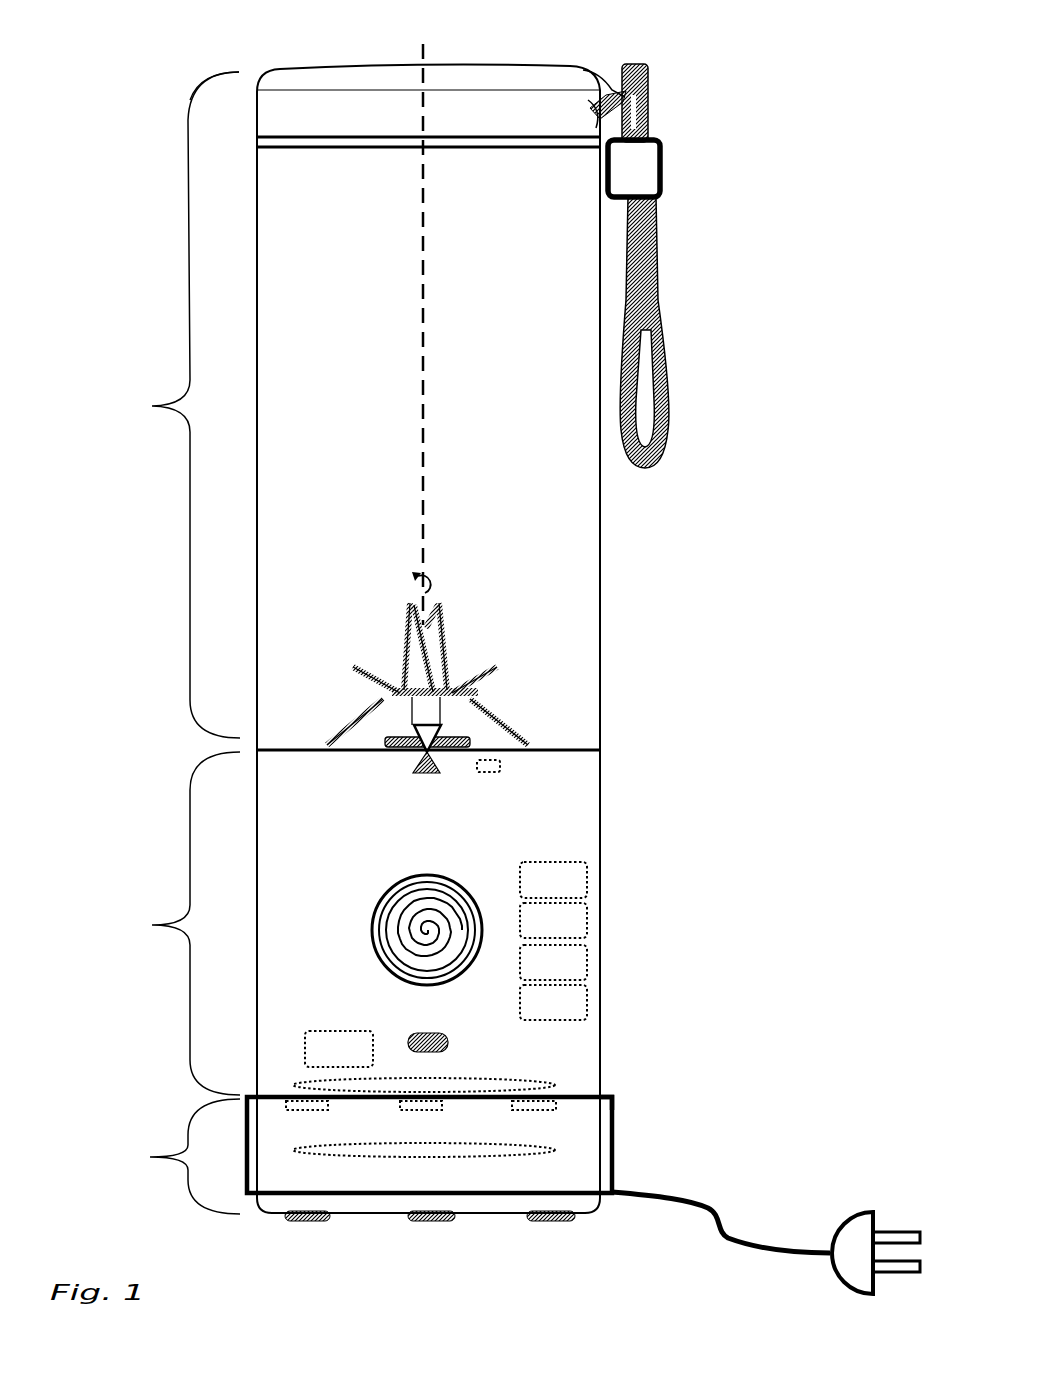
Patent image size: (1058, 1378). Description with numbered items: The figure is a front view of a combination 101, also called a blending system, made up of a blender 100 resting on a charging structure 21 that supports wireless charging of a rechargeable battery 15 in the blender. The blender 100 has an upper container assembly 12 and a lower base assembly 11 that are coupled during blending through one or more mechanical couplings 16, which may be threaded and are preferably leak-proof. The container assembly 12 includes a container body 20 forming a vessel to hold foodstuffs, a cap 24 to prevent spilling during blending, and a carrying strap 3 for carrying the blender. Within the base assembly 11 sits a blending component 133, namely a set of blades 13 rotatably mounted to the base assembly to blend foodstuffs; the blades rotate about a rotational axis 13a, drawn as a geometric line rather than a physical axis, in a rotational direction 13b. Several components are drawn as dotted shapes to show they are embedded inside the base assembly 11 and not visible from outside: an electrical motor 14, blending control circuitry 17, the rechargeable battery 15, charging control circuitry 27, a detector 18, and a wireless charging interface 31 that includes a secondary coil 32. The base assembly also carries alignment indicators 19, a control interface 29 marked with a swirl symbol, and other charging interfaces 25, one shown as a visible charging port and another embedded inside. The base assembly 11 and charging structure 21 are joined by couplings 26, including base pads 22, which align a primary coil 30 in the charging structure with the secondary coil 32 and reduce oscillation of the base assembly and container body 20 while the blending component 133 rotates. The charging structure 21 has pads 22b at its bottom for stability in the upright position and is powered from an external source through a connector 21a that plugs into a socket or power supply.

The blender 100 is at (755, 80).
The combination 101 is at (187, 76).
The container assembly 12 is at (152, 406).
The base assembly 11 is at (152, 925).
The cap 24 is at (435, 66).
The carrying strap 3 is at (668, 428).
The container body 20 is at (587, 475).
The rotational axis 13a is at (426, 458).
The rotational direction 13b is at (435, 585).
The blending component 133 is at (493, 670).
The set of blades 13 is at (787, 696).
The mechanical couplings 16 is at (607, 750).
The detector 18 is at (500, 765).
The alignment indicators 19 is at (437, 775).
The charging control circuitry 27 is at (510, 832).
The electrical motor 14 is at (587, 882).
The blending control circuitry 17 is at (587, 920).
The rechargeable battery 15 is at (587, 962).
The control interface 29 is at (440, 985).
The other charging interfaces 25 is at (373, 1055).
The charging structure 21 is at (150, 1157).
The couplings 26 is at (620, 1093).
The base pads 22 is at (483, 1125).
The wireless charging interface 31 is at (558, 1085).
The secondary coil 32 is at (824, 1160).
The primary coil 30 is at (555, 1150).
The pads 22b is at (470, 1262).
The connector 21a is at (928, 1315).